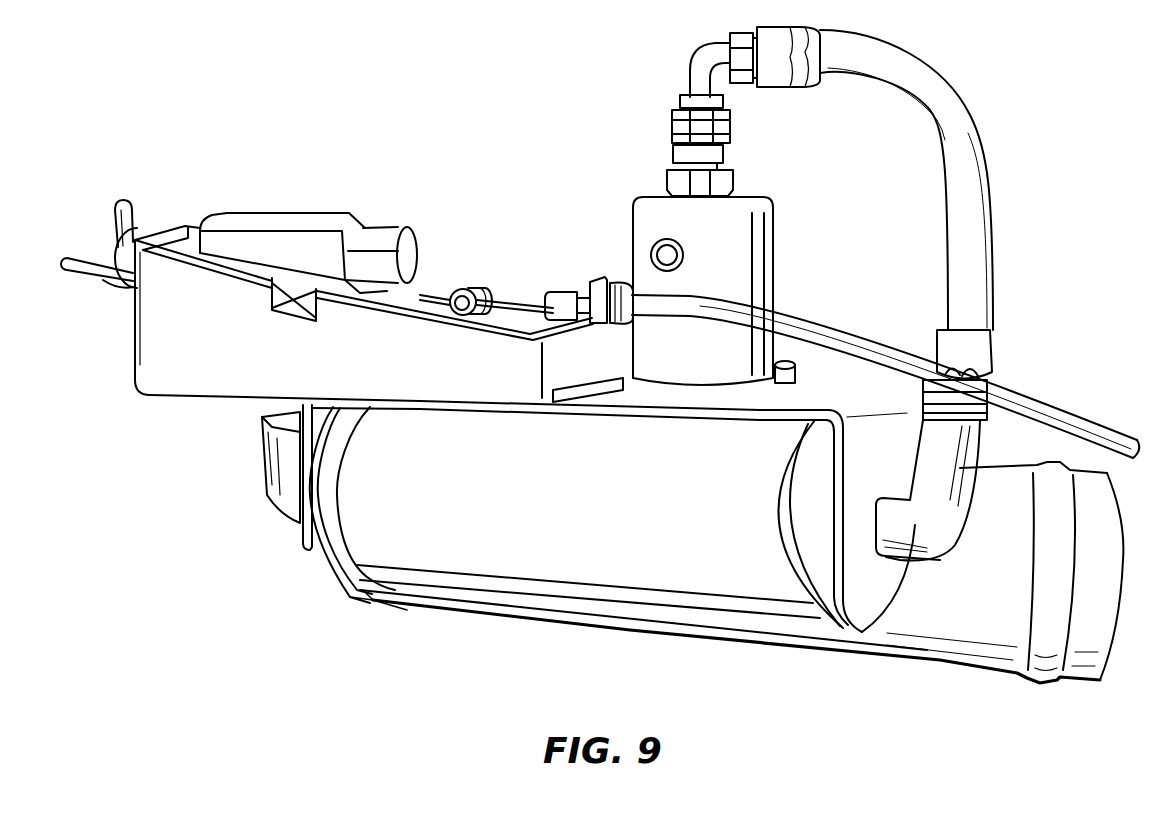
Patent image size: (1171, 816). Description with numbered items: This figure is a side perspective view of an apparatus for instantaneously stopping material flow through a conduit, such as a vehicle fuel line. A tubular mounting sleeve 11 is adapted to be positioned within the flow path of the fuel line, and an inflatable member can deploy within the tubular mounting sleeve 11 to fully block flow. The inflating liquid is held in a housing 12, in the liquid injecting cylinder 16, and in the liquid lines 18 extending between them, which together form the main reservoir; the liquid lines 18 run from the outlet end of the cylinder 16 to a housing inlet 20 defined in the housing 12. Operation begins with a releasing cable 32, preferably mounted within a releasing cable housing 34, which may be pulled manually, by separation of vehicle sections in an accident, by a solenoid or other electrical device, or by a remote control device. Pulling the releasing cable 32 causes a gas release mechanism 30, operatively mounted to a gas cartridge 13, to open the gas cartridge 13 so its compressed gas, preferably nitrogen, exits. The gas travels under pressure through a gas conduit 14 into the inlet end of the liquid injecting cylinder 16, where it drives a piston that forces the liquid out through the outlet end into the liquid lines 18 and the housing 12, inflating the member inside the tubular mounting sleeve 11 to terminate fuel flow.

The tubular mounting sleeve 11 is at (1006, 600).
The housing 12 is at (737, 269).
The gas cartridge 13 is at (184, 226).
The gas conduit 14 is at (262, 448).
The liquid injecting cylinder 16 is at (655, 530).
The liquid lines 18 is at (965, 118).
The housing inlet 20 is at (713, 187).
The gas release mechanism 30 is at (333, 212).
The releasing cable 32 is at (524, 290).
The releasing cable housing 34 is at (1043, 405).